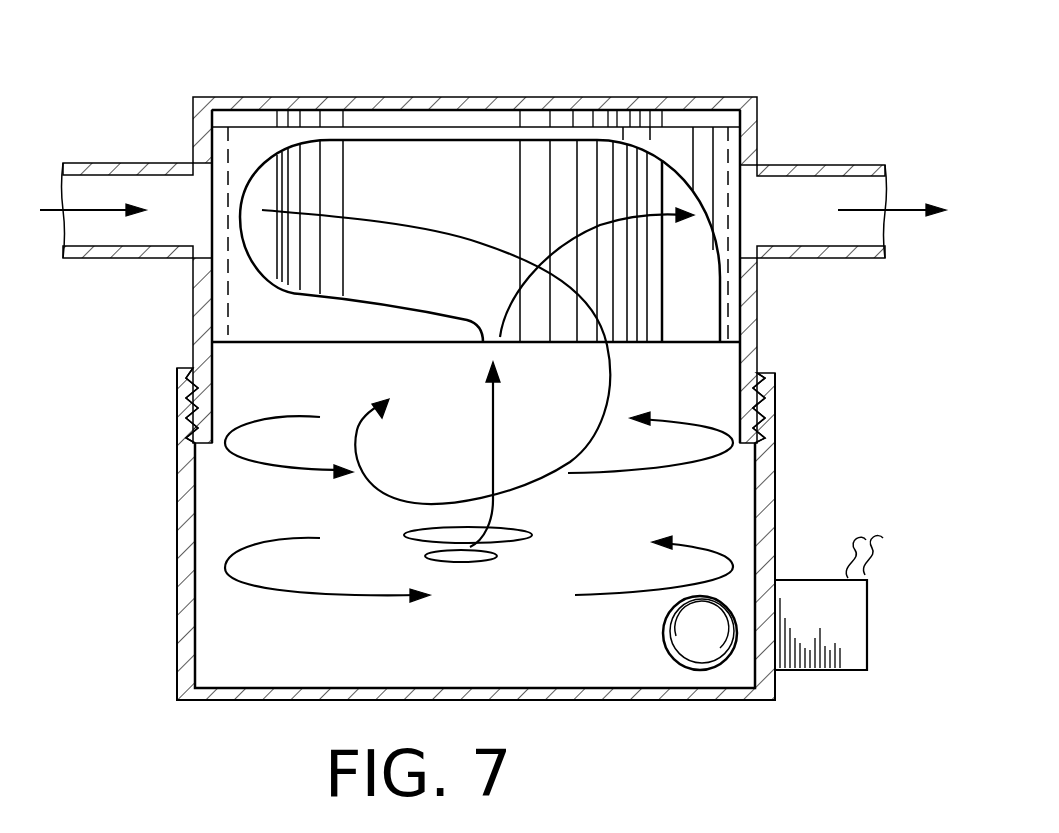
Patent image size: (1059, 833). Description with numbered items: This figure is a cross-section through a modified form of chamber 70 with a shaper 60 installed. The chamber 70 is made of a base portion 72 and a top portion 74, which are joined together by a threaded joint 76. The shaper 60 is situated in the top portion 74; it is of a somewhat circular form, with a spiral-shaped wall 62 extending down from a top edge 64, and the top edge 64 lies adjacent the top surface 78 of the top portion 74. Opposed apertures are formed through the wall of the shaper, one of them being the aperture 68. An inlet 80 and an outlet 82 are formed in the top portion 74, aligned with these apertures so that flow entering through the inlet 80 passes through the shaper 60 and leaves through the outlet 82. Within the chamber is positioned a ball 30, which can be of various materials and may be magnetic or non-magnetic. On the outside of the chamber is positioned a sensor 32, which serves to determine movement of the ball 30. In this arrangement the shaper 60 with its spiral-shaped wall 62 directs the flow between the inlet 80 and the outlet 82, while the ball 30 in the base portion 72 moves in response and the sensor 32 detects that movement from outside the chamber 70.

The ball 30 is at (710, 652).
The sensor 32 is at (838, 670).
The shaper 60 is at (665, 138).
The spiral-shaped wall 62 is at (306, 337).
The top edge 64 is at (448, 128).
The aperture 68 is at (228, 160).
The chamber 70 is at (493, 350).
The base portion 72 is at (778, 497).
The top portion 74 is at (755, 310).
The threaded joint 76 is at (775, 385).
The top surface 78 is at (570, 97).
The inlet 80 is at (147, 165).
The outlet 82 is at (822, 163).